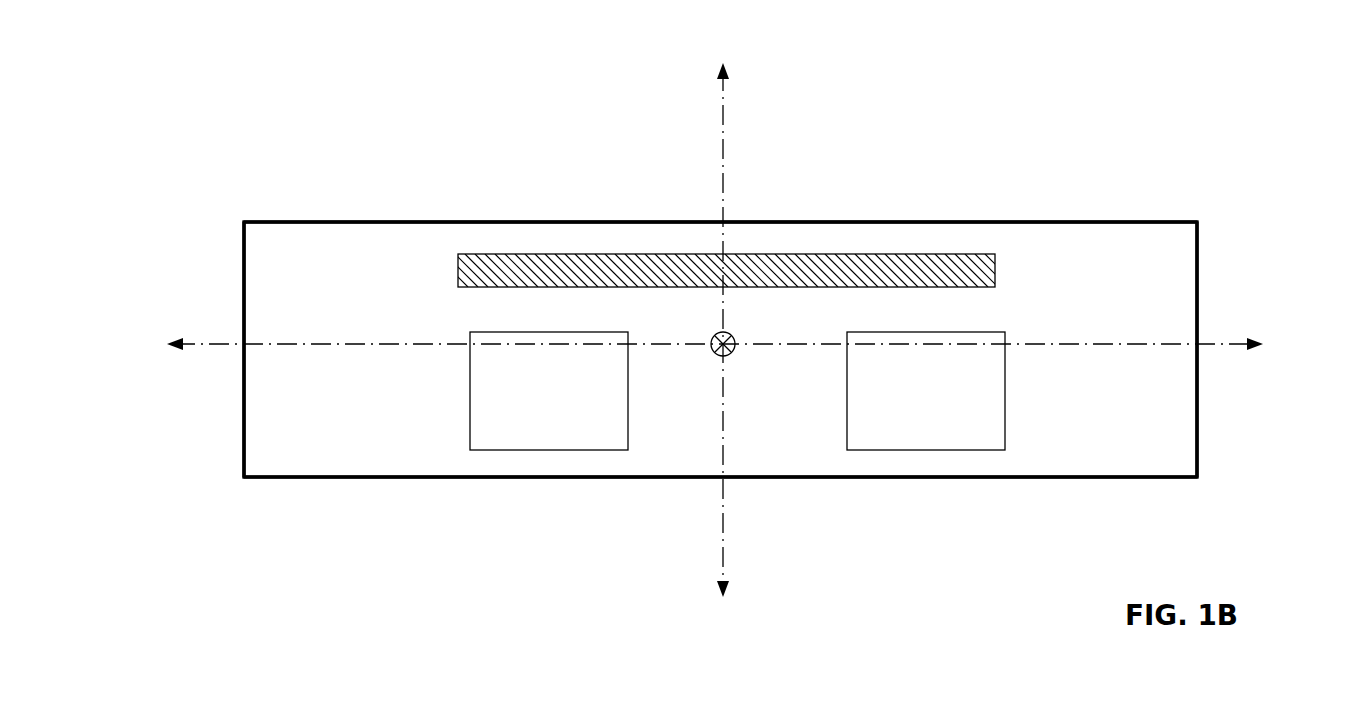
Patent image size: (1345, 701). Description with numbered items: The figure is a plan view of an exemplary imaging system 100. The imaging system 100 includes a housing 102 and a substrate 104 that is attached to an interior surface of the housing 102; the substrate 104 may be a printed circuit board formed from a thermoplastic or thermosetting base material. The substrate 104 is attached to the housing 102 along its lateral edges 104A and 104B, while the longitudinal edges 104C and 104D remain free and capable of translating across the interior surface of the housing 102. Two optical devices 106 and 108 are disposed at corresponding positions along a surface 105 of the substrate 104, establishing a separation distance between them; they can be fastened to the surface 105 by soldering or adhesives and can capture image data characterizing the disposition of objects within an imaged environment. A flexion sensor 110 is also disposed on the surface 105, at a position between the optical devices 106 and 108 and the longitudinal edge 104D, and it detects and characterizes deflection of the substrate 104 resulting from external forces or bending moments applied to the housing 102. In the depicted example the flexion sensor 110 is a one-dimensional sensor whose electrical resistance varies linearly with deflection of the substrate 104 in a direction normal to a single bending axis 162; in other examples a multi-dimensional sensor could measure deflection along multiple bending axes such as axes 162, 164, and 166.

The imaging system 100 is at (1222, 98).
The housing 102 is at (1198, 231).
The substrate 104 is at (1038, 420).
The lateral edge 104A is at (245, 381).
The lateral edge 104B is at (1195, 370).
The longitudinal edge 104C is at (358, 477).
The longitudinal edge 104D is at (1093, 223).
The surface 105 is at (300, 268).
The optical device 106 is at (549, 391).
The optical device 108 is at (926, 391).
The flexion sensor 110 is at (970, 267).
The axis 162 is at (1222, 346).
The axis 164 is at (716, 357).
The axis 166 is at (723, 110).